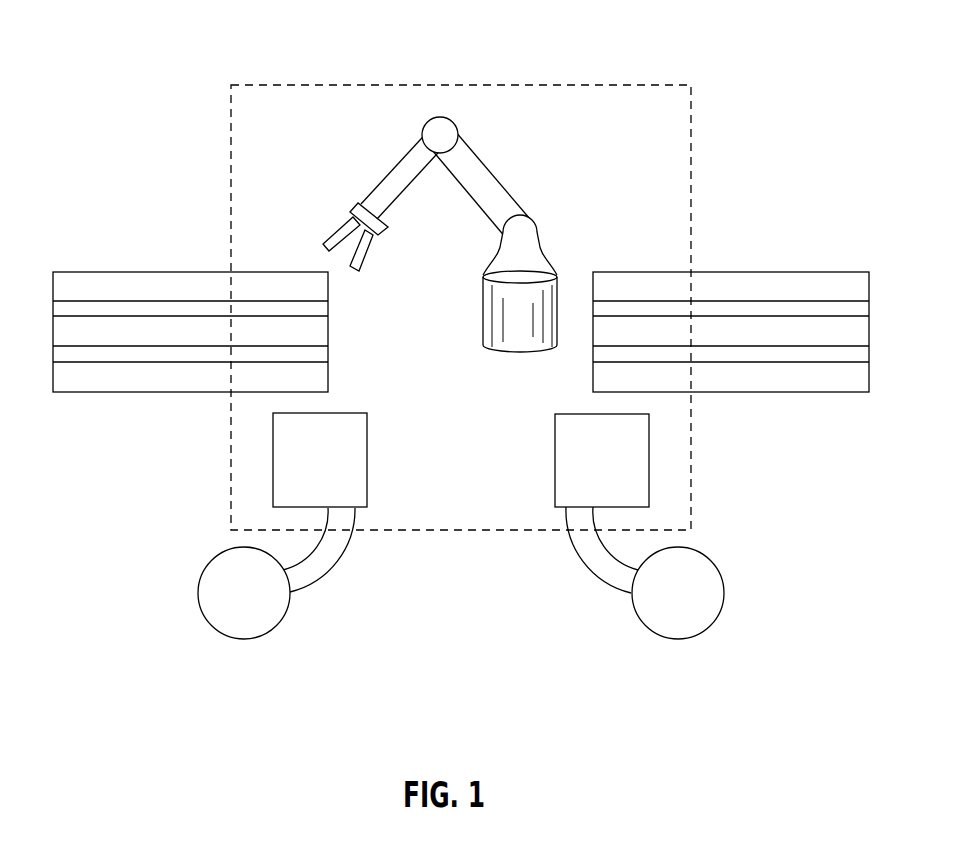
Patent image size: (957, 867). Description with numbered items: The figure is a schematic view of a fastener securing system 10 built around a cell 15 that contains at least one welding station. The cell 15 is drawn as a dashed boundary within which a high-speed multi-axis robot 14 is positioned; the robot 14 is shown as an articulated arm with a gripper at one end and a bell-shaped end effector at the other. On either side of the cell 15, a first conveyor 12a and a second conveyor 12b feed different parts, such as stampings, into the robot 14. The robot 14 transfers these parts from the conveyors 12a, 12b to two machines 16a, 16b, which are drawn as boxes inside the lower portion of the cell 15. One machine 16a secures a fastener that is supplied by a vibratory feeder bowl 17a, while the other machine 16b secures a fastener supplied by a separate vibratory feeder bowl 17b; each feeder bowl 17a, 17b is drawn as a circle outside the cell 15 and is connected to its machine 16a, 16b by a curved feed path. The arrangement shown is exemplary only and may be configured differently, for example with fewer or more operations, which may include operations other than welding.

The fastener securing system 10 is at (461, 358).
The first conveyor 12a is at (152, 278).
The second conveyor 12b is at (788, 278).
The robot 14 is at (535, 203).
The cell 15 is at (585, 85).
The machine 16a is at (347, 427).
The machine 16b is at (570, 427).
The vibratory feeder bowl 17a is at (238, 623).
The vibratory feeder bowl 17b is at (687, 625).